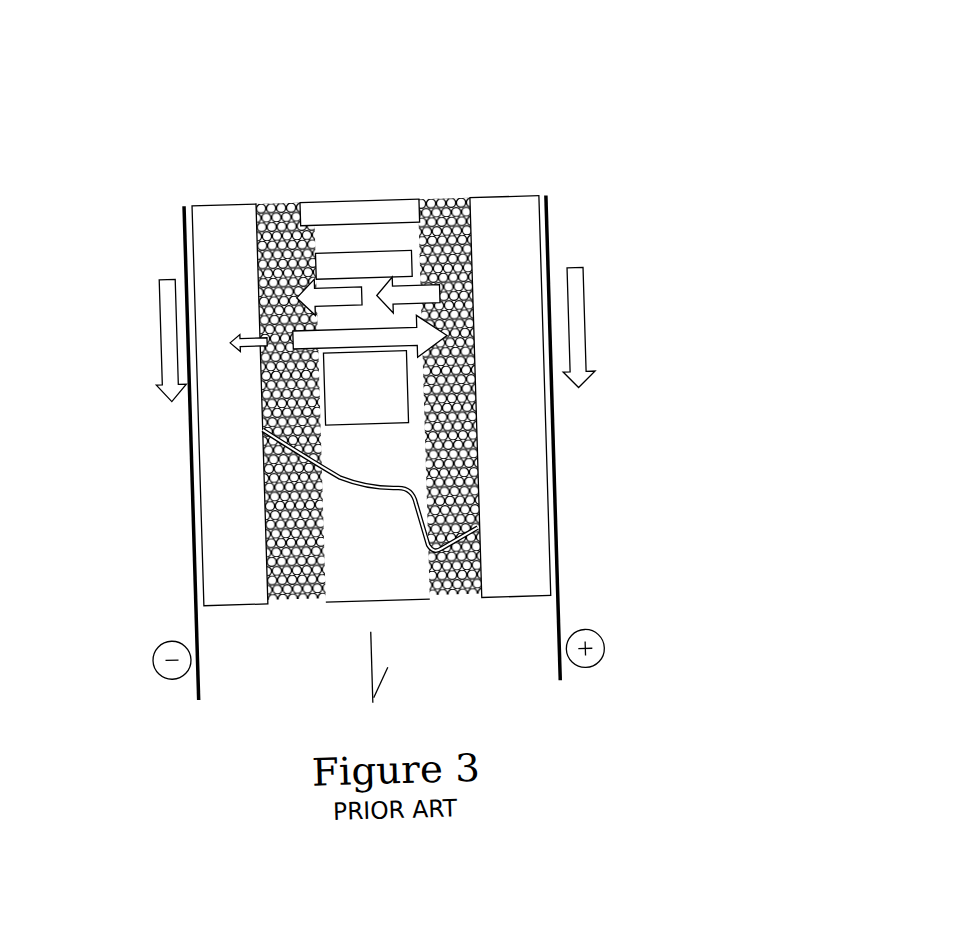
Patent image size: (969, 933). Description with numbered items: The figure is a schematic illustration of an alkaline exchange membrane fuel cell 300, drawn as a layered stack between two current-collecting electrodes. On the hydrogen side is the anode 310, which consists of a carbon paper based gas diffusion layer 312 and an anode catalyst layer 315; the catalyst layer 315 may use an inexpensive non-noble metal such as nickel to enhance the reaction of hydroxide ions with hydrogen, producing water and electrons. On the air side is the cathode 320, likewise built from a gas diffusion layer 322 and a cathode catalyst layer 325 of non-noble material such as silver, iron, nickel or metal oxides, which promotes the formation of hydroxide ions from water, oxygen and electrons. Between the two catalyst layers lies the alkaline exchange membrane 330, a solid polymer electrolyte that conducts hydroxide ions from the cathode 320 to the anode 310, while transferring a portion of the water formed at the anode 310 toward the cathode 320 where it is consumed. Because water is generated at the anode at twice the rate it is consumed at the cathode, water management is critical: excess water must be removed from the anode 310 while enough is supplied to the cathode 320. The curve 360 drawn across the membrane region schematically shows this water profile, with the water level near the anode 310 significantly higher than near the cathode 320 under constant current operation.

The alkaline exchange membrane fuel cell 300 is at (660, 302).
The anode 310 is at (169, 77).
The gas diffusion layer 312 is at (194, 206).
The anode catalyst layer 315 is at (256, 207).
The cathode 320 is at (566, 74).
The gas diffusion layer 322 is at (529, 206).
The cathode catalyst layer 325 is at (460, 222).
The alkaline exchange membrane 330 is at (381, 256).
The graph 360 is at (369, 489).